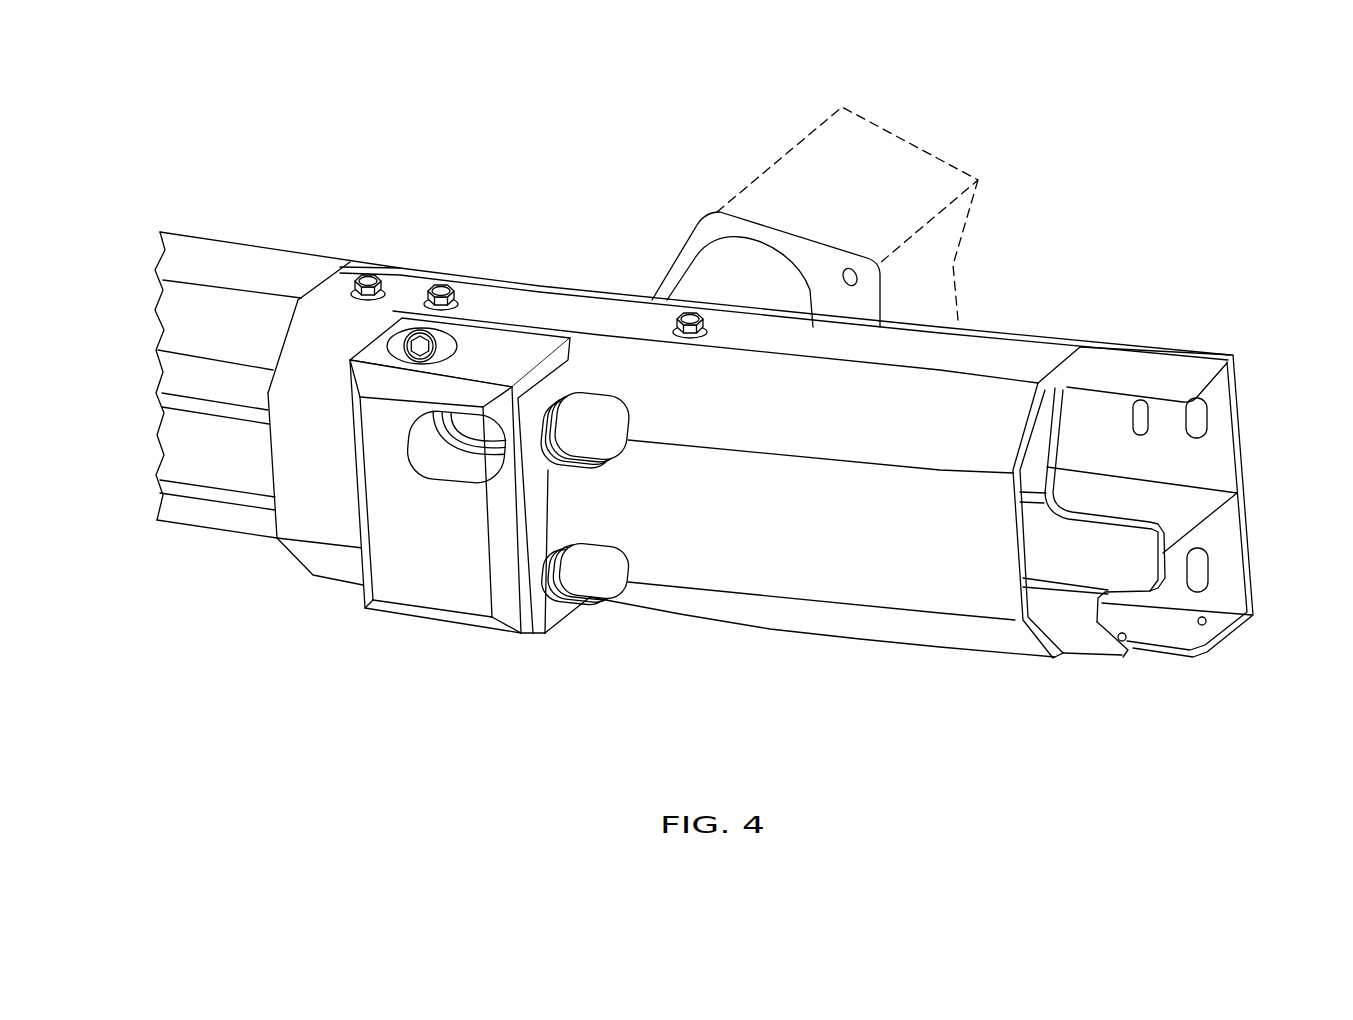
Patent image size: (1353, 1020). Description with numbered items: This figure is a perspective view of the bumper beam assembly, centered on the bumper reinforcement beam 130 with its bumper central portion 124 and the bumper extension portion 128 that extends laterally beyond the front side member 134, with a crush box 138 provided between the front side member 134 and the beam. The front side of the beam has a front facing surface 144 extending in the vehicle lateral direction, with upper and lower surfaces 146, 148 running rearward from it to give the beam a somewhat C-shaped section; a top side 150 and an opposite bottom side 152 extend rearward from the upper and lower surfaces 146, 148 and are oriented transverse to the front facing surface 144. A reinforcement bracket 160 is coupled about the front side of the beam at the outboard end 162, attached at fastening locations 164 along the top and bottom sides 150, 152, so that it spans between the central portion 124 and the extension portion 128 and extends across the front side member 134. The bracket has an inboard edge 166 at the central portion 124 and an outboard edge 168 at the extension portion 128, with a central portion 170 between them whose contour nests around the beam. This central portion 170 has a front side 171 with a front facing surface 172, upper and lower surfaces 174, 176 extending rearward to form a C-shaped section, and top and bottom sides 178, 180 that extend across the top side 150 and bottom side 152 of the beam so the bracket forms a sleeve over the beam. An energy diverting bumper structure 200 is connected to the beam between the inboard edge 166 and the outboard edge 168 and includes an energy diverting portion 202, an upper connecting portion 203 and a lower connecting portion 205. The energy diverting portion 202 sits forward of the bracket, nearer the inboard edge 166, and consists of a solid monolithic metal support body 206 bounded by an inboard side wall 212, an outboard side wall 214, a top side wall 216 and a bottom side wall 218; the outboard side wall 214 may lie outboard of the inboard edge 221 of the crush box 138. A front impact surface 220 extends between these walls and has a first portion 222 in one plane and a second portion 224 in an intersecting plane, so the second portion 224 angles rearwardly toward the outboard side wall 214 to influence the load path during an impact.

The bumper central portion 124 is at (217, 159).
The bumper extension portion 128 is at (1101, 186).
The bumper reinforcement beam 130 is at (207, 255).
The front side member 134 is at (780, 188).
The crush box 138 is at (783, 270).
The front facing surface 144 is at (212, 479).
The upper surface 146 is at (162, 308).
The lower surface 148 is at (167, 501).
The top side 150 is at (283, 266).
The bottom side 152 is at (243, 538).
The reinforcement bracket 160 is at (903, 680).
The outboard end 162 is at (1272, 387).
The fastening locations 164 is at (441, 288).
The inboard edge 166 is at (270, 463).
The outboard edge 168 is at (1038, 421).
The central portion 170 is at (910, 348).
The front side 171 is at (688, 592).
The front facing surface 172 is at (973, 598).
The upper surface 174 is at (990, 397).
The lower surface 176 is at (775, 636).
The top side 178 is at (575, 307).
The bottom side 180 is at (333, 610).
The energy diverting bumper structure 200 is at (436, 693).
The energy diverting portion 202 is at (380, 670).
The upper connecting portion 203 is at (407, 312).
The lower connecting portion 205 is at (540, 700).
The support body 206 is at (482, 520).
The inboard side wall 212 is at (363, 519).
The outboard side wall 214 is at (547, 388).
The top side wall 216 is at (487, 340).
The bottom side wall 218 is at (493, 703).
The front impact surface 220 is at (420, 557).
The inboard edge 221 is at (703, 283).
The first portion 222 is at (387, 448).
The second portion 224 is at (507, 590).